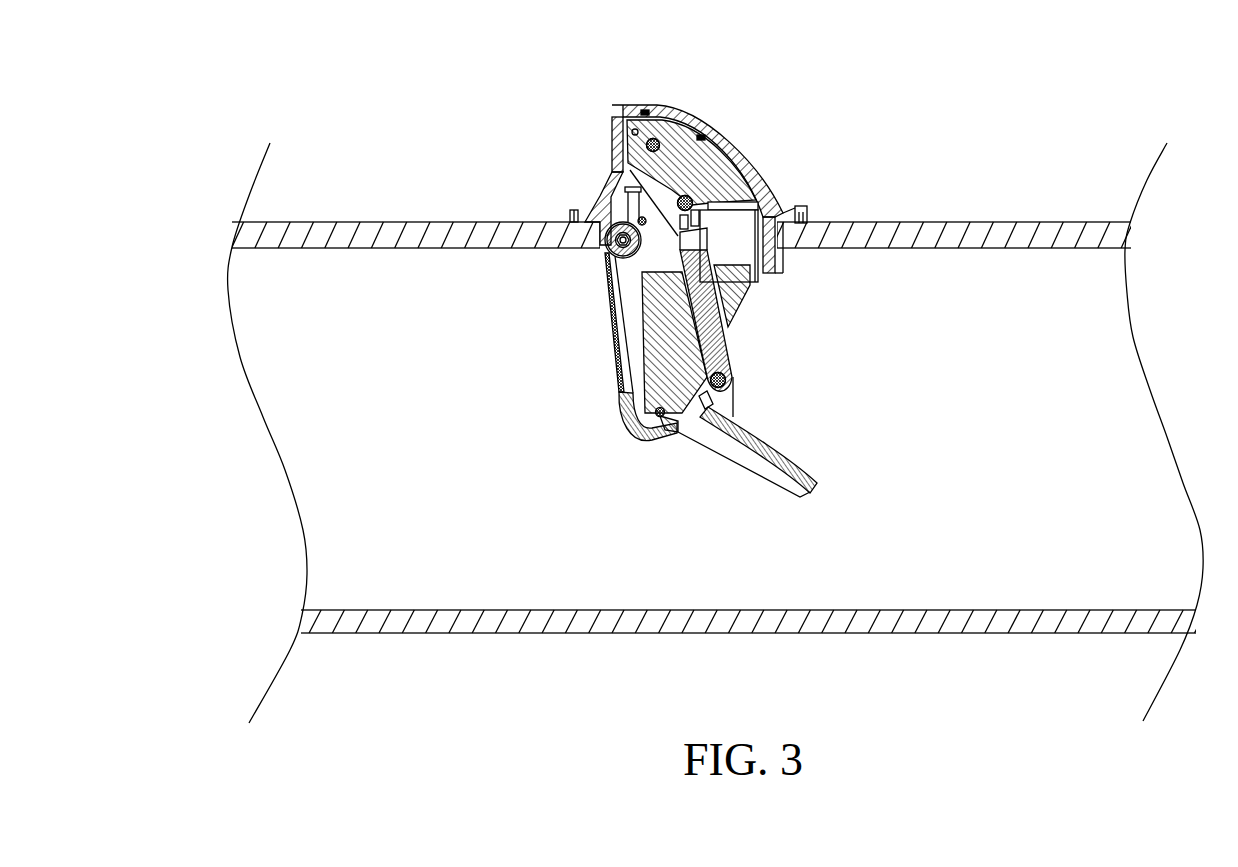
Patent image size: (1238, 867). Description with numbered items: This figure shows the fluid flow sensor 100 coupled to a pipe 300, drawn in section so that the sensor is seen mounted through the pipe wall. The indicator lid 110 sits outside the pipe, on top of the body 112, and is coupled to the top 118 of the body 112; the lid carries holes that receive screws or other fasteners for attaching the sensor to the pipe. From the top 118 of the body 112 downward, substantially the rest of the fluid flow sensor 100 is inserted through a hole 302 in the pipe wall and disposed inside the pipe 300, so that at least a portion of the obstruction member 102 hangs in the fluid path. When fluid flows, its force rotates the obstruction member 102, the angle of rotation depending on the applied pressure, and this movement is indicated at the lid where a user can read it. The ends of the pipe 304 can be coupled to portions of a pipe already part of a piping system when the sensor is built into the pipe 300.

The fluid flow sensor 100 is at (699, 270).
The obstruction member 102 is at (793, 446).
The indicator lid 110 is at (719, 139).
The body 112 is at (737, 326).
The top of the body 118 is at (784, 263).
The pipe 300 is at (934, 210).
The hole in the pipe 302 is at (800, 210).
The ends of the pipe 304 is at (242, 384).